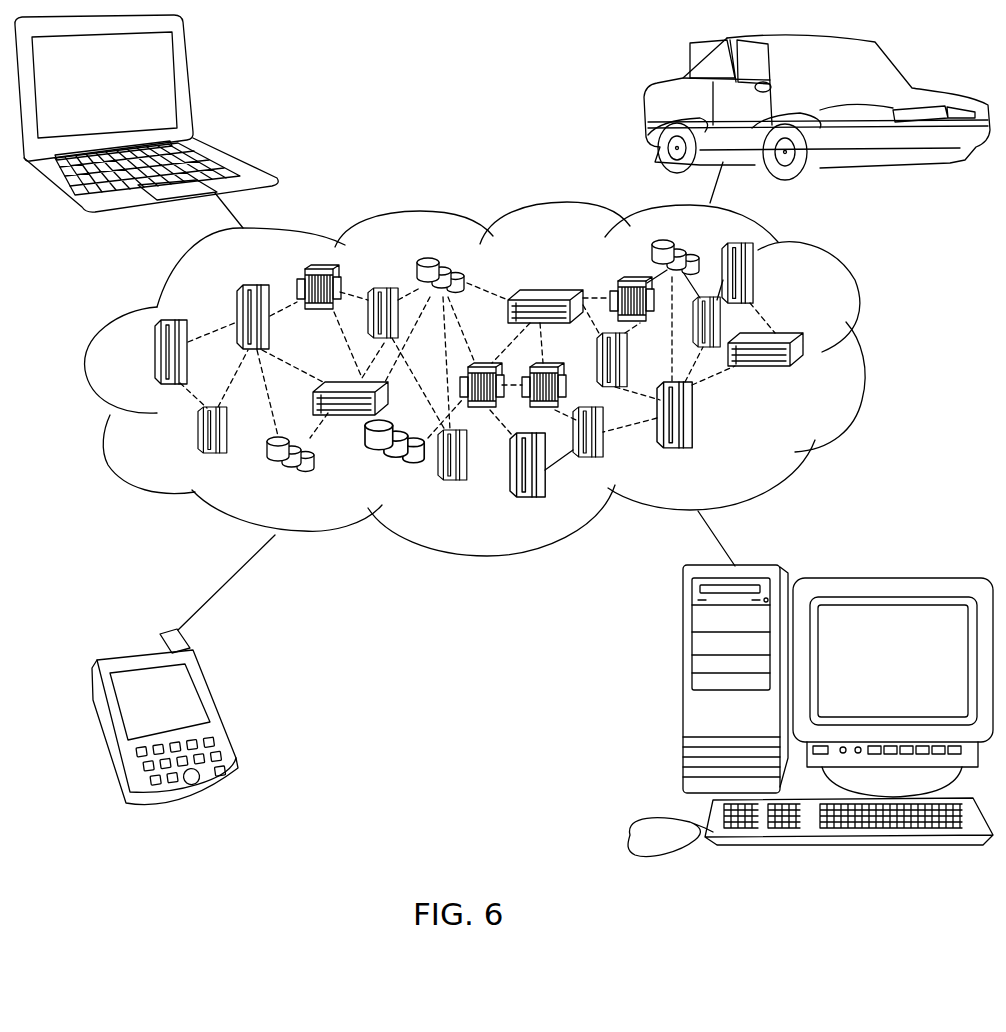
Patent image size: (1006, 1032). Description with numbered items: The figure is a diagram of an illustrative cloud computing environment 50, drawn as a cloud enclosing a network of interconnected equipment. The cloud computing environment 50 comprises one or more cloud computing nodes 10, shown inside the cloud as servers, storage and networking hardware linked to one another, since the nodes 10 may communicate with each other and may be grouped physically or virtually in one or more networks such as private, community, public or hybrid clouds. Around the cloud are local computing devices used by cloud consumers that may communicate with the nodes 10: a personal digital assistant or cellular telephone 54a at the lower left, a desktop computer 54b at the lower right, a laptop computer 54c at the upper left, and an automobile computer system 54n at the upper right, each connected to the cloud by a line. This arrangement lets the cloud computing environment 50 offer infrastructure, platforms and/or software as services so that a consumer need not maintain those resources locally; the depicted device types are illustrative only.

The cloud computing node 10 is at (820, 373).
The cloud computing environment 50 is at (852, 290).
The personal digital assistant (PDA) or cellular telephone 54a is at (213, 705).
The desktop computer 54b is at (683, 692).
The laptop computer 54c is at (190, 77).
The automobile computer system 54n is at (652, 88).